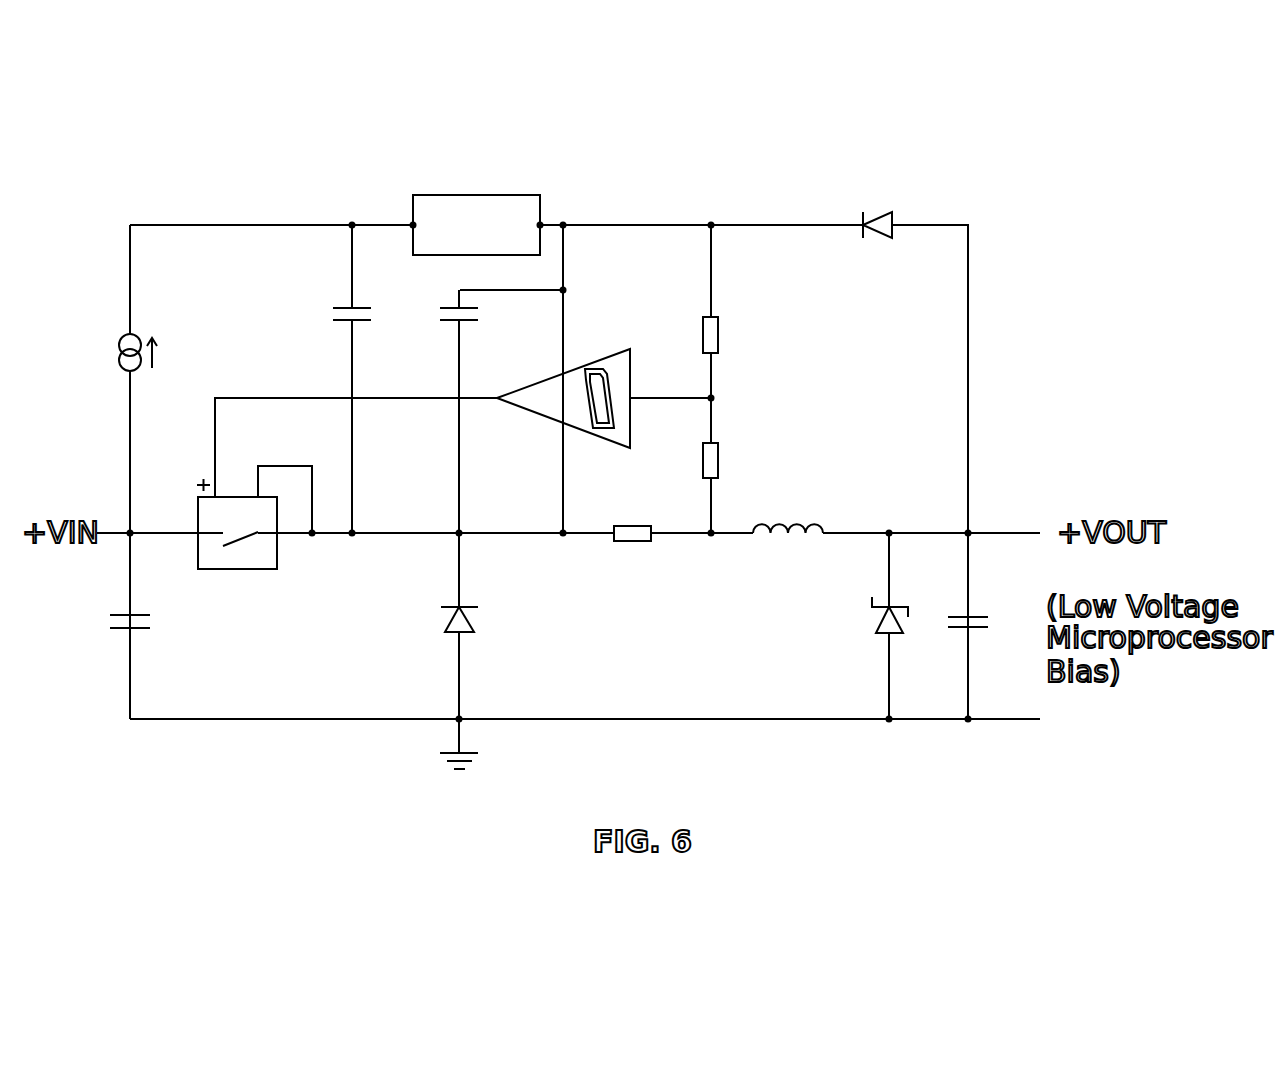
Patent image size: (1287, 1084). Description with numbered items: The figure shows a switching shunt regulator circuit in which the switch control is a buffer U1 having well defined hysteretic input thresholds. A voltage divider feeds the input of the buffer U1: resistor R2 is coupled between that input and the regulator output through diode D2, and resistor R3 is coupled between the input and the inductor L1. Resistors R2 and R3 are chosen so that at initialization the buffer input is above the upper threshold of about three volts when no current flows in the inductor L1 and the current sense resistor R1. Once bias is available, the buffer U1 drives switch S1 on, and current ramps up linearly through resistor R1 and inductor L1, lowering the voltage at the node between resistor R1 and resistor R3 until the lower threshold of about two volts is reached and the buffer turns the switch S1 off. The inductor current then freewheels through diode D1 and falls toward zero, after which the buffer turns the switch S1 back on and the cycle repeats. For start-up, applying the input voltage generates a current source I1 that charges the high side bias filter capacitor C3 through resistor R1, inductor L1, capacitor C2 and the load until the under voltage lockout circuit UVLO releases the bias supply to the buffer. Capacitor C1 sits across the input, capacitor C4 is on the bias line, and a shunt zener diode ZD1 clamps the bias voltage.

The under voltage lockout circuit UVLO is at (476, 225).
The current source I1 is at (125, 337).
The capacitor C1 is at (152, 622).
The capacitor C2 is at (991, 622).
The high side bias filter capacitor C3 is at (330, 314).
The capacitor C4 is at (439, 314).
The buffer U1 is at (735, 391).
The current sense resistor R1 is at (634, 552).
The resistor R2 is at (689, 335).
The resistor R3 is at (689, 462).
The diode D1 is at (437, 621).
The diode D2 is at (881, 247).
The switch S1 is at (254, 537).
The inductor L1 is at (788, 551).
The shunt zener diode ZD1 is at (859, 618).